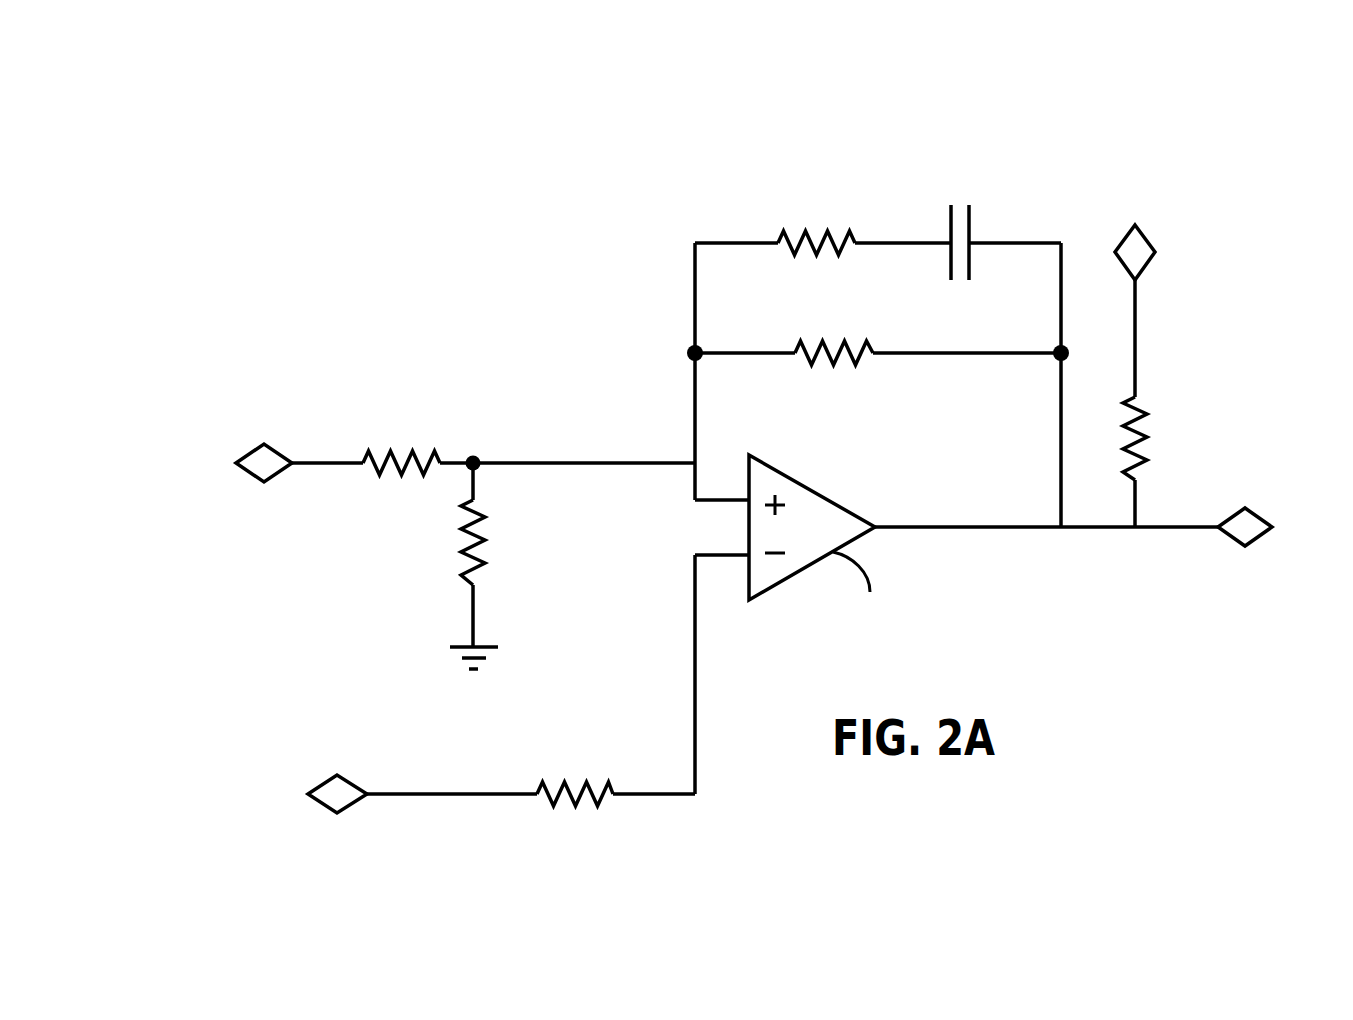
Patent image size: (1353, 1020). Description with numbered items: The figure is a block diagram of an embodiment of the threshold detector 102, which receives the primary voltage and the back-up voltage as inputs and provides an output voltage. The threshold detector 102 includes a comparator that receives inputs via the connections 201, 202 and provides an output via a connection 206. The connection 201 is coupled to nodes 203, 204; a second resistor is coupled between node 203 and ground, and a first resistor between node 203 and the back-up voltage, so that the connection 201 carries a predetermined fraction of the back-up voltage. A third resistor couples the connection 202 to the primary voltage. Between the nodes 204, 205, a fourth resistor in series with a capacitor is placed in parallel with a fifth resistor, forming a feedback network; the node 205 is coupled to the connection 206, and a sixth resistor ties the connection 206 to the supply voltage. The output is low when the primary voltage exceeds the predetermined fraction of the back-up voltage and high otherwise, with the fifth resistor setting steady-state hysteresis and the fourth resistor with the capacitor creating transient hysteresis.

The threshold detector 102 is at (356, 250).
The connection 201 is at (720, 500).
The connection 202 is at (712, 555).
The node 203 is at (475, 457).
The node 204 is at (686, 362).
The node 205 is at (1053, 361).
The connection 206 is at (932, 528).